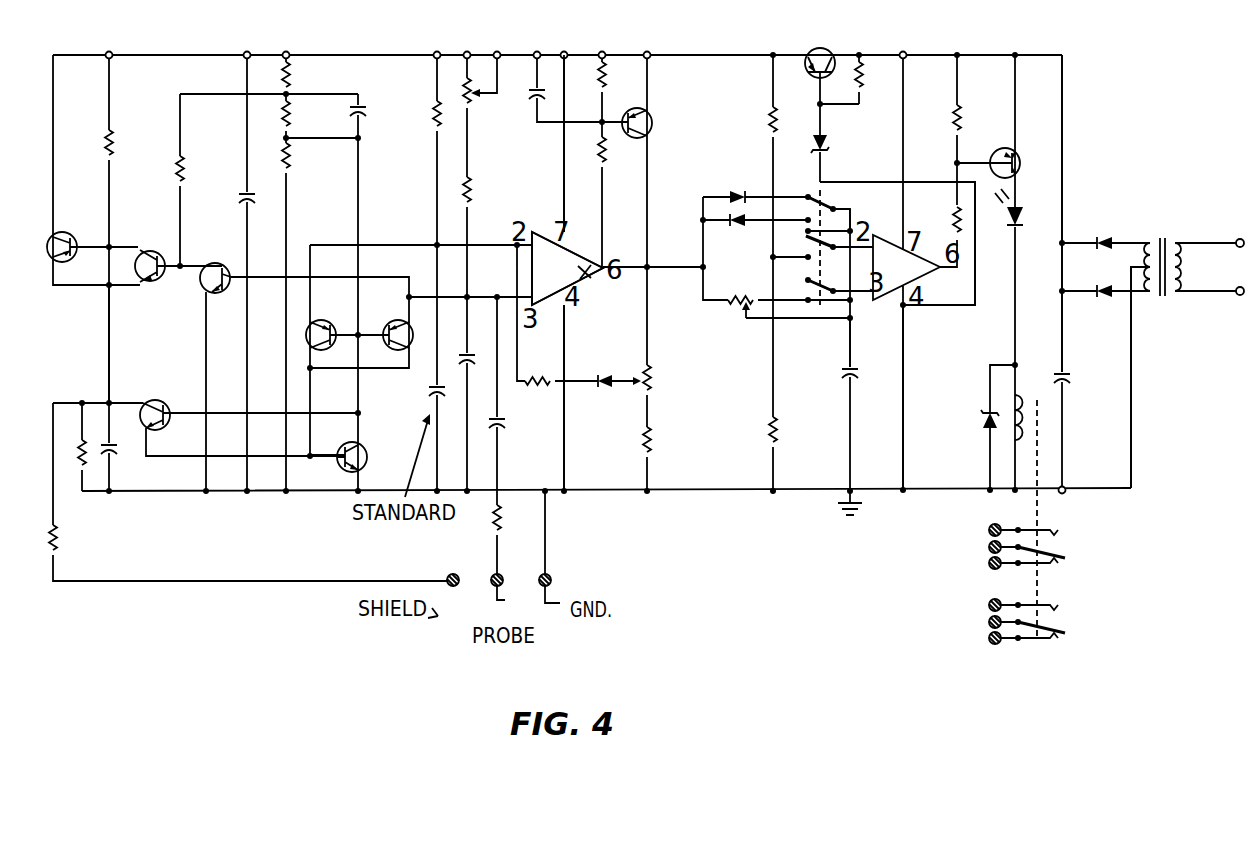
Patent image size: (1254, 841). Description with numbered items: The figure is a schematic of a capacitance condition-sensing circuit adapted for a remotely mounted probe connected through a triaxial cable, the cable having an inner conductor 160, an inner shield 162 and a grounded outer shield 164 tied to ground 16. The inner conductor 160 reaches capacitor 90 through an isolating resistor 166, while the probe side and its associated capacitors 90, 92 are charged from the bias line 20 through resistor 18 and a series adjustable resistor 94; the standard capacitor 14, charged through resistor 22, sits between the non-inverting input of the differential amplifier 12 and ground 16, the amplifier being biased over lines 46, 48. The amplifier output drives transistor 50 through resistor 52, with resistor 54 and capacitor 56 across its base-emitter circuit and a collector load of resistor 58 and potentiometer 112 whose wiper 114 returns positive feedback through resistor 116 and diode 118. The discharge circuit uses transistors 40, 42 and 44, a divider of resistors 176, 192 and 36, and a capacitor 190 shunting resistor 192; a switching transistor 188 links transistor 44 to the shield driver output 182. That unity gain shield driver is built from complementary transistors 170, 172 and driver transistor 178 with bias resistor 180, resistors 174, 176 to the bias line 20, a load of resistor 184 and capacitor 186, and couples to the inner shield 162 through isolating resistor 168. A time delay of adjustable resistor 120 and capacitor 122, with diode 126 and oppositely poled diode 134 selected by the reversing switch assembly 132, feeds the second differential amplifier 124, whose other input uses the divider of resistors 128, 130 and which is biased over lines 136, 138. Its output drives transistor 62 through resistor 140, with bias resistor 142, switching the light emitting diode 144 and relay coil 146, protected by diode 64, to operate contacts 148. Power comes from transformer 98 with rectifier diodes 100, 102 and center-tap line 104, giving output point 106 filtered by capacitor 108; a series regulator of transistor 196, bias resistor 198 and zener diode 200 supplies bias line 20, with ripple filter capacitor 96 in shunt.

The bias line 20 is at (380, 56).
The ground 16 is at (665, 494).
The bias resistor 180 is at (106, 160).
The resistor 176 is at (303, 73).
The resistor 192 is at (303, 117).
The resistor 36 is at (287, 179).
The resistor 174 is at (176, 182).
The ripple filter capacitor 96 is at (244, 190).
The capacitor 190 is at (356, 104).
The driver transistor 178 is at (77, 242).
The transistor 172 is at (153, 253).
The transistor 170 is at (214, 247).
The output of the unity gain amplifier 182 is at (109, 328).
The resistor 184 is at (78, 443).
The capacitor 186 is at (124, 444).
The switching transistor 188 is at (155, 405).
The isolating resistor 168 is at (66, 553).
The transistor 40 is at (344, 329).
The transistor 42 is at (398, 326).
The transistor 44 is at (371, 461).
The resistor 18 is at (448, 121).
The adjustable resistor 94 is at (470, 106).
The resistor 22 is at (478, 177).
The capacitor 56 is at (533, 98).
The line 48 is at (564, 217).
The differential amplifier 12 is at (569, 271).
The standard capacitor 14 is at (429, 407).
The capacitor 92 is at (485, 352).
The capacitor 90 is at (516, 414).
The resistor 116 is at (551, 366).
The diode 118 is at (622, 352).
The wiper 114 is at (638, 388).
The potentiometer 112 is at (648, 395).
The line 46 is at (566, 460).
The resistor 58 is at (648, 426).
The resistor 54 is at (604, 90).
The resistor 52 is at (606, 167).
The transistor 50 is at (650, 131).
The resistor 128 is at (766, 133).
The resistor 130 is at (788, 447).
The diode 126 is at (742, 170).
The diode 134 is at (745, 225).
The adjustable resistor 120 is at (747, 297).
The reversing switch assembly 132 is at (832, 199).
The differential amplifier 124 is at (865, 307).
The capacitor 122 is at (869, 366).
The transistor 196 is at (824, 54).
The bias resistor 198 is at (858, 92).
The zener diode 200 is at (826, 138).
The line 136 is at (904, 182).
The bias resistor 142 is at (955, 110).
The resistor 140 is at (950, 228).
The transistor 62 is at (1015, 172).
The light emitting diode 144 is at (1030, 200).
The rectifier output point 106 is at (1062, 197).
The diode 100 is at (1118, 222).
The diode 102 is at (1110, 294).
The transformer 98 is at (1176, 223).
The line 104 is at (1134, 405).
The ripple filter capacitor 108 is at (1082, 375).
The relay coil 146 is at (1029, 400).
The protective diode 64 is at (982, 425).
The line 138 is at (900, 437).
The relay contacts 148 is at (988, 572).
The isolating resistor 166 is at (502, 526).
The inner conductor 160 is at (467, 598).
The inner shield 162 is at (454, 586).
The outer shield 164 is at (555, 584).